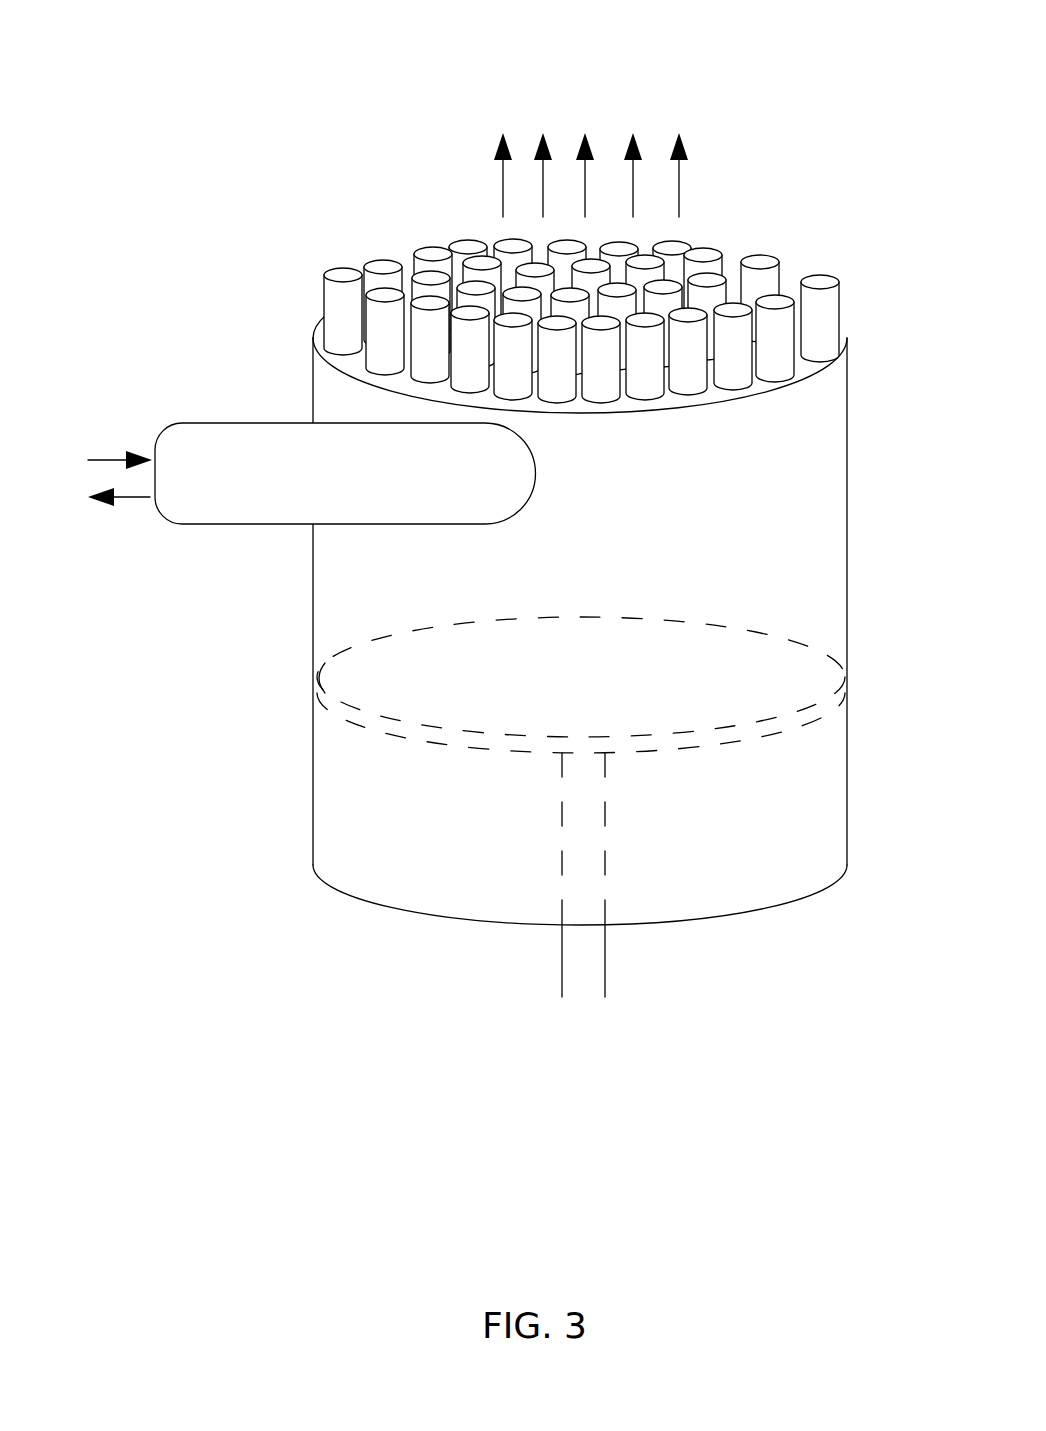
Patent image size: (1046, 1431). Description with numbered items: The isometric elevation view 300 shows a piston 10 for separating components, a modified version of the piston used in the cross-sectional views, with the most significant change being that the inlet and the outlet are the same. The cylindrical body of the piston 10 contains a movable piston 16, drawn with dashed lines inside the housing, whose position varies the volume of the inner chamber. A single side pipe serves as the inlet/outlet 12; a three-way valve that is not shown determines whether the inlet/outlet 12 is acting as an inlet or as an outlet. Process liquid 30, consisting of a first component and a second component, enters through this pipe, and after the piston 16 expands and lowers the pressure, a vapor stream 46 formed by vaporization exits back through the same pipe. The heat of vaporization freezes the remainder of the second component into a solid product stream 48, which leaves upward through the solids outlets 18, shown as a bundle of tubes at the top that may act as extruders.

The isometric elevation view 300 is at (165, 75).
The piston 10 is at (315, 613).
The inlet/outlet 12 is at (279, 523).
The piston 16 is at (800, 649).
The solids outlets 18 is at (835, 271).
The process liquid 30 is at (101, 461).
The vapor stream 46 is at (100, 499).
The solid product stream 48 is at (591, 158).